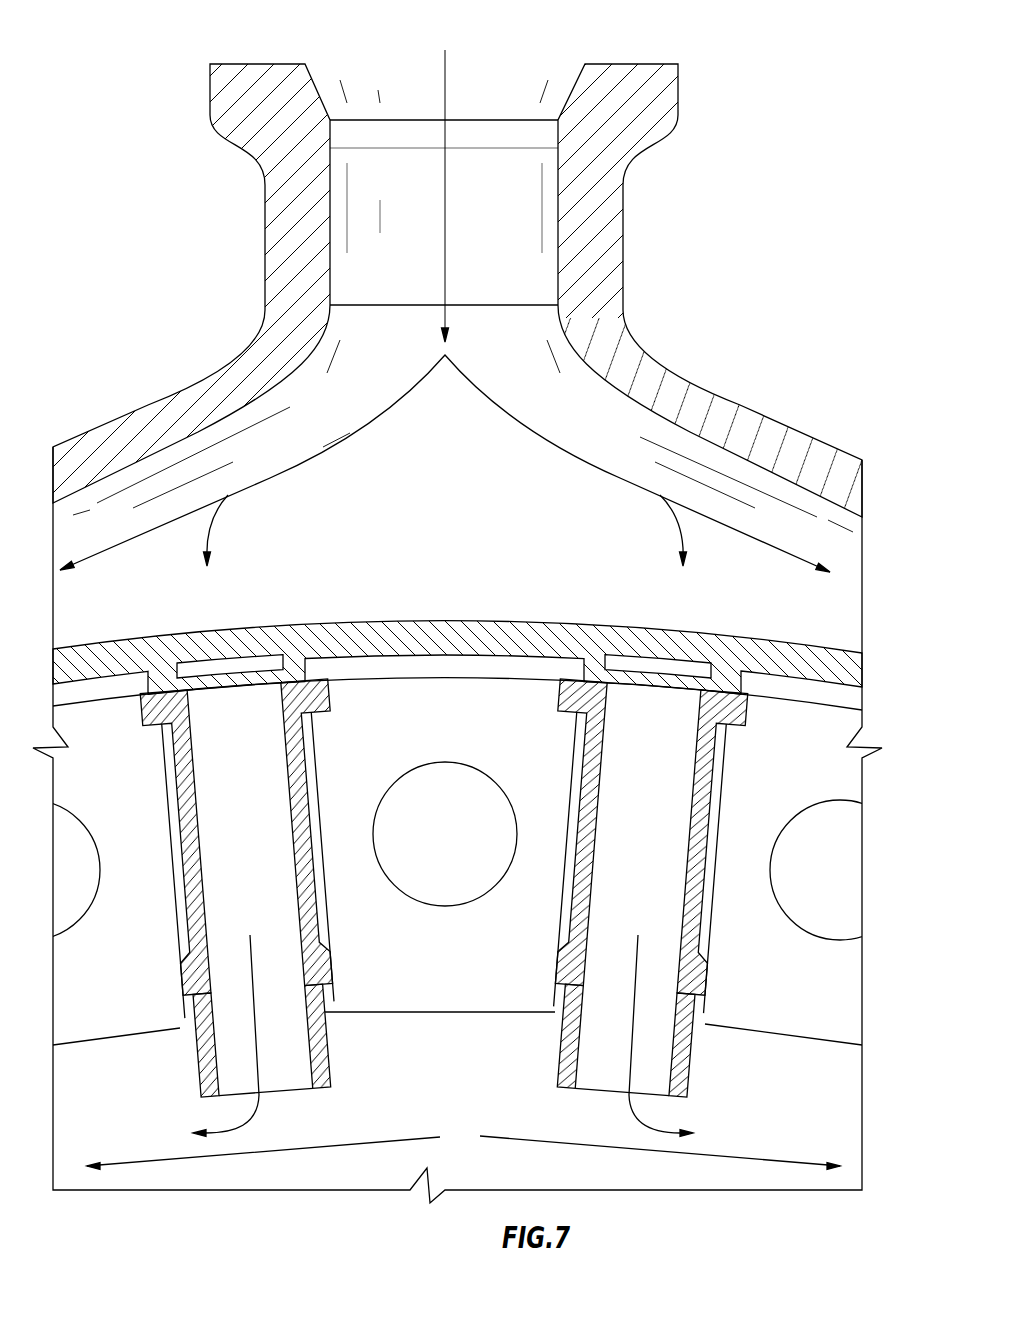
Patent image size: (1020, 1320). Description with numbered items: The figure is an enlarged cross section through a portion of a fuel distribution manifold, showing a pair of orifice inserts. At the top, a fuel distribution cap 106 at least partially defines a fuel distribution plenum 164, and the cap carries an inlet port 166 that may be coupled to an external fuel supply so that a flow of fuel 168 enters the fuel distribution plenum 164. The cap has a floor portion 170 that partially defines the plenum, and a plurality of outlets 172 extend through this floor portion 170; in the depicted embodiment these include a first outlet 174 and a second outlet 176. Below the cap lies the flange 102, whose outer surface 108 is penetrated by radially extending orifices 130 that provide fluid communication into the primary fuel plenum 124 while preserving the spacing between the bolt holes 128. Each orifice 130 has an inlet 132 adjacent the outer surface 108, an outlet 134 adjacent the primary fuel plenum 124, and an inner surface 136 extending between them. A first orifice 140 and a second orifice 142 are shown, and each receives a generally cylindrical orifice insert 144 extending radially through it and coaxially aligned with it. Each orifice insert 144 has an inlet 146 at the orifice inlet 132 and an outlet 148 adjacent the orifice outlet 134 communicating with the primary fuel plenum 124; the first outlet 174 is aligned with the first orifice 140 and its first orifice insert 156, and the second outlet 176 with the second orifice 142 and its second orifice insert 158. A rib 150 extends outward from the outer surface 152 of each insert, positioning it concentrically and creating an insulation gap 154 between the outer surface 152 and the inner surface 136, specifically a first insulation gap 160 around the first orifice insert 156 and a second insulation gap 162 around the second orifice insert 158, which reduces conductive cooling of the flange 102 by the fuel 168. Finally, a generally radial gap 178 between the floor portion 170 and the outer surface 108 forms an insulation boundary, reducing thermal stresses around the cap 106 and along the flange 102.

The flange 102 is at (442, 712).
The fuel distribution cap 106 is at (610, 258).
The outer surface 108 is at (110, 645).
The primary fuel plenum 124 is at (463, 1144).
The bolt holes 128 is at (505, 798).
The orifice 130 is at (457, 843).
The inlet 132 is at (330, 688).
The outlet 134 is at (183, 1020).
The inner surface 136 is at (294, 852).
The first orifice 140 is at (314, 733).
The second orifice 142 is at (727, 781).
The orifice insert 144 is at (330, 1050).
The inlet 146 is at (253, 708).
The outlet 148 is at (278, 1073).
The rib 150 is at (322, 958).
The outer surface 152 is at (183, 880).
The insulation gap 154 is at (166, 782).
The first orifice insert 156 is at (287, 703).
The second orifice insert 158 is at (707, 711).
The first insulation gap 160 is at (318, 880).
The second insulation gap 162 is at (704, 905).
The fuel distribution plenum 164 is at (416, 461).
The inlet port 166 is at (500, 90).
The fuel 168 is at (447, 215).
The floor portion 170 is at (842, 622).
The outlets 172 is at (693, 676).
The first outlet 174 is at (223, 662).
The second outlet 176 is at (643, 660).
The radial gap 178 is at (520, 665).